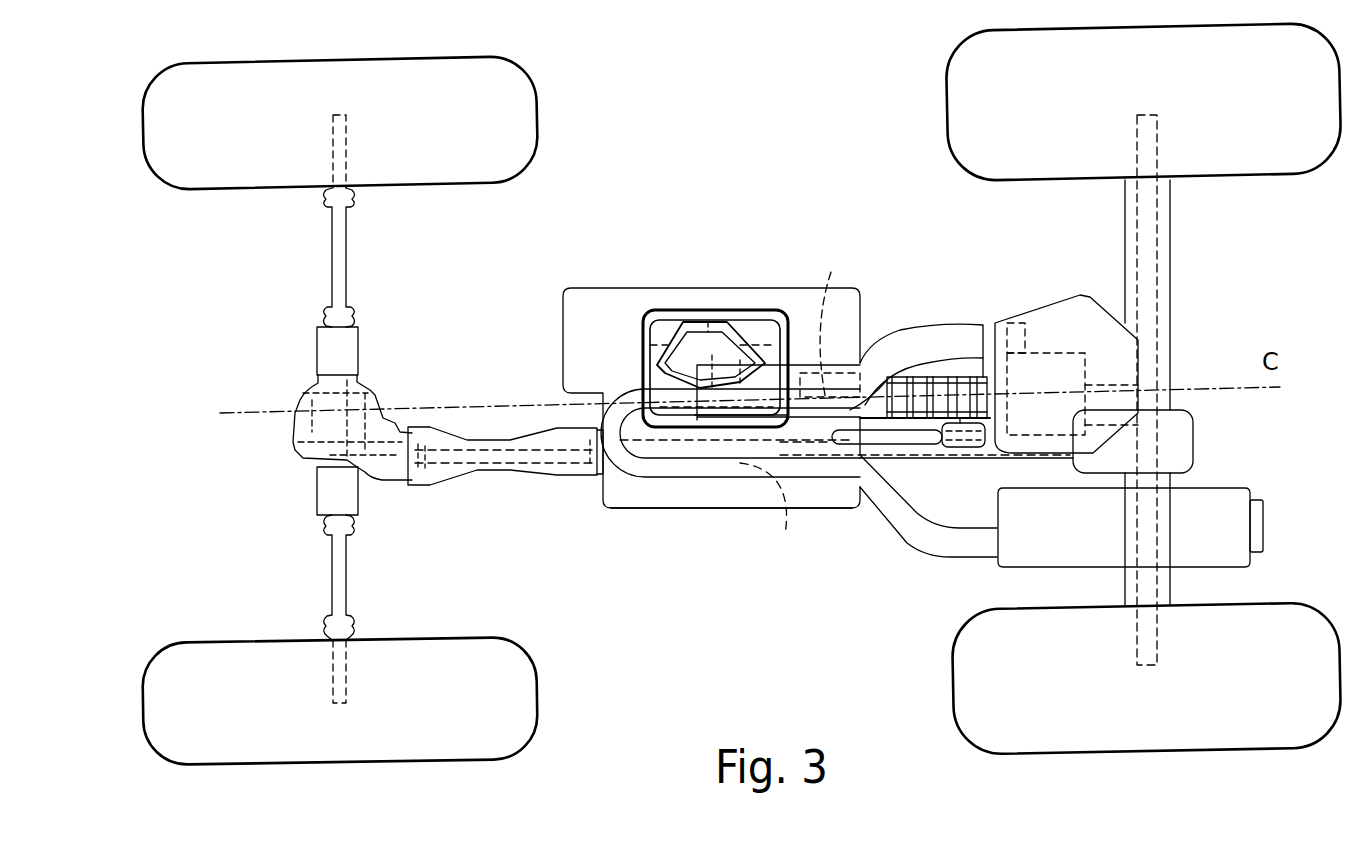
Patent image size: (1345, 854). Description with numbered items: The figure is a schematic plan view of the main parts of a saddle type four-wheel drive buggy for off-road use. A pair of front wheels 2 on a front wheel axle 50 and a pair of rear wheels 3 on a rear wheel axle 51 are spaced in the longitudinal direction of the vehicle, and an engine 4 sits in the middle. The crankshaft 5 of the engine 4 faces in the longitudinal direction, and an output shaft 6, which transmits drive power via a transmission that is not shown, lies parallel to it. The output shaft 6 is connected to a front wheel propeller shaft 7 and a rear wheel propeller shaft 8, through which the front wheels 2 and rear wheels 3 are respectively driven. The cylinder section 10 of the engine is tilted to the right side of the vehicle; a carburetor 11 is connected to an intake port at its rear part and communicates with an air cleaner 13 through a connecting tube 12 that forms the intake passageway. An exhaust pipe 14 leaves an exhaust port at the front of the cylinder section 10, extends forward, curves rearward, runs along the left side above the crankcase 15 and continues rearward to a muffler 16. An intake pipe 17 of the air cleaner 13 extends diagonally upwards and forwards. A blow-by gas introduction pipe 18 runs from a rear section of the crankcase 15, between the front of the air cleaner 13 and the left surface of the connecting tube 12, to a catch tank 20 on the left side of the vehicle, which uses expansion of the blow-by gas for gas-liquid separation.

The front wheels 2 is at (520, 104).
The rear wheels 3 is at (958, 82).
The engine 4 is at (592, 282).
The crankshaft 5 is at (772, 305).
The output shaft 6 is at (782, 490).
The front wheel propeller shaft 7 is at (540, 436).
The rear wheel propeller shaft 8 is at (995, 455).
The cylinder section 10 is at (668, 312).
The carburetor 11 is at (830, 320).
The connecting tube 12 is at (948, 375).
The air cleaner 13 is at (1053, 318).
The exhaust pipe 14 is at (658, 472).
The crankcase 15 is at (705, 495).
The muffler 16 is at (1205, 498).
The intake pipe 17 is at (903, 338).
The blow-by gas introduction pipe 18 is at (900, 437).
The catch tank 20 is at (966, 447).
The front wheel axle 50 is at (330, 270).
The rear wheel axle 51 is at (1158, 326).